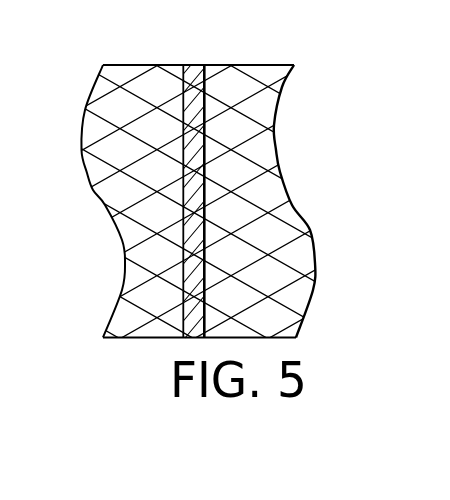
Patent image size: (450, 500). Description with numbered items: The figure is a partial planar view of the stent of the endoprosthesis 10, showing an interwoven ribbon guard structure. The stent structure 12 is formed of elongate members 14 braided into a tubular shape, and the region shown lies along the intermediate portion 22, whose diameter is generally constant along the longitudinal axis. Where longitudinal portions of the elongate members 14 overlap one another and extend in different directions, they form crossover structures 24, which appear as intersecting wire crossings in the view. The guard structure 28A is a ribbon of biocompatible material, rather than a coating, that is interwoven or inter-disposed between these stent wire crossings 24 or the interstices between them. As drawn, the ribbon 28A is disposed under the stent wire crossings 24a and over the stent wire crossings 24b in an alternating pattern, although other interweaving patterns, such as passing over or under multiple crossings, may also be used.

The endoprosthesis 10 is at (252, 63).
The stent structure 12 is at (125, 260).
The elongate members 14 is at (252, 203).
The intermediate portion 22 is at (105, 205).
The crossover structures 24 is at (268, 298).
The under stent wire crossings 24a is at (197, 78).
The over stent wire crossings 24b is at (273, 119).
The guard structure 28A is at (275, 148).